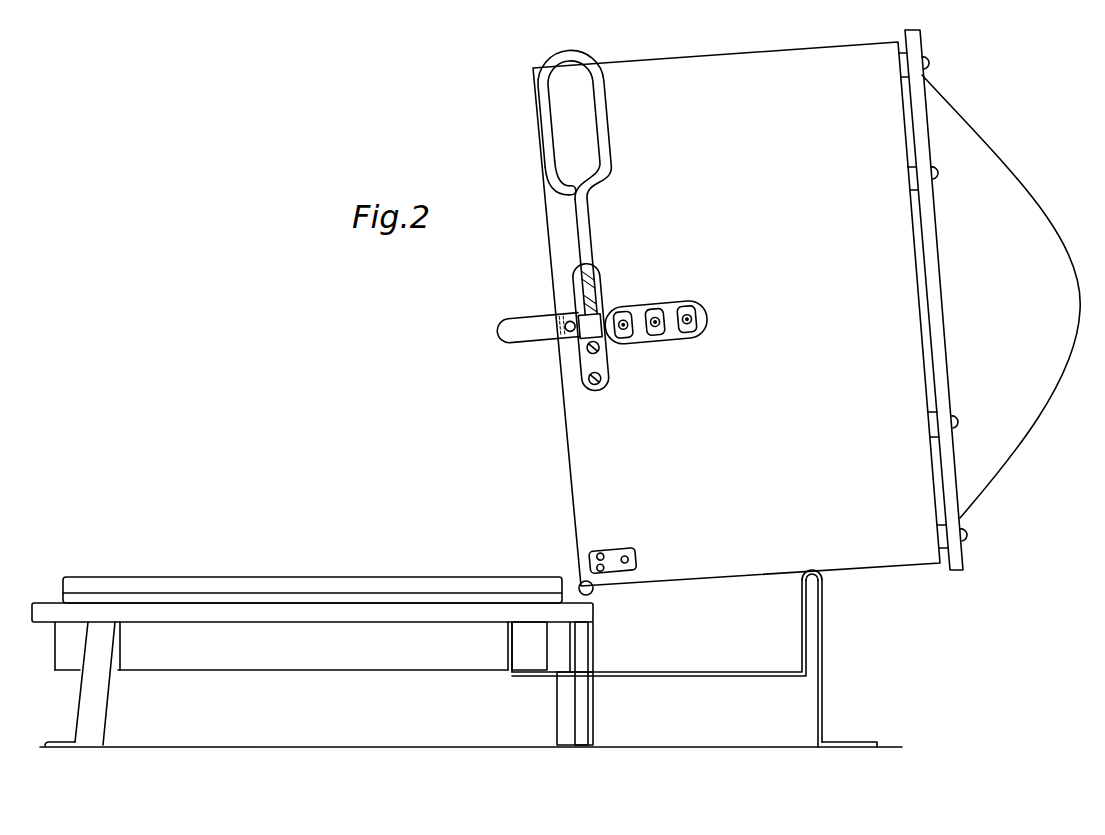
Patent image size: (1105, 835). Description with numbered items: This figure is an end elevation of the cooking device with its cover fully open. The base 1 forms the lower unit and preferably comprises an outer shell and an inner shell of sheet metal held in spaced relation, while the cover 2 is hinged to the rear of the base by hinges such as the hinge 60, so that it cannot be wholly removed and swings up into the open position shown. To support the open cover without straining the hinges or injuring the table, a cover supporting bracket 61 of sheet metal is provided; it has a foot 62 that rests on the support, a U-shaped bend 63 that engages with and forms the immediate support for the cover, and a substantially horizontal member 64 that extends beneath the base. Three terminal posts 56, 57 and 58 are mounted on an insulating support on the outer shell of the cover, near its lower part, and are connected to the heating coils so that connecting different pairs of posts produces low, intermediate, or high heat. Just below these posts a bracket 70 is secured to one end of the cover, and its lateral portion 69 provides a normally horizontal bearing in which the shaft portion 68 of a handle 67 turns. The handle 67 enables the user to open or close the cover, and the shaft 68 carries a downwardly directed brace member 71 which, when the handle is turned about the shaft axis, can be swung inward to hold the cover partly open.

The base 1 is at (53, 674).
The cover 2 is at (953, 88).
The terminal post 56 is at (689, 319).
The terminal post 57 is at (657, 320).
The terminal post 58 is at (624, 321).
The hinge 60 is at (612, 562).
The cover supporting bracket 61 is at (826, 650).
The foot 62 is at (855, 741).
The U-shaped bend 63 is at (823, 580).
The horizontal member 64 is at (683, 675).
The handle 67 is at (600, 145).
The shaft portion 68 is at (583, 253).
The lateral portion 69 is at (596, 320).
The bracket 70 is at (604, 360).
The brace member 71 is at (515, 327).